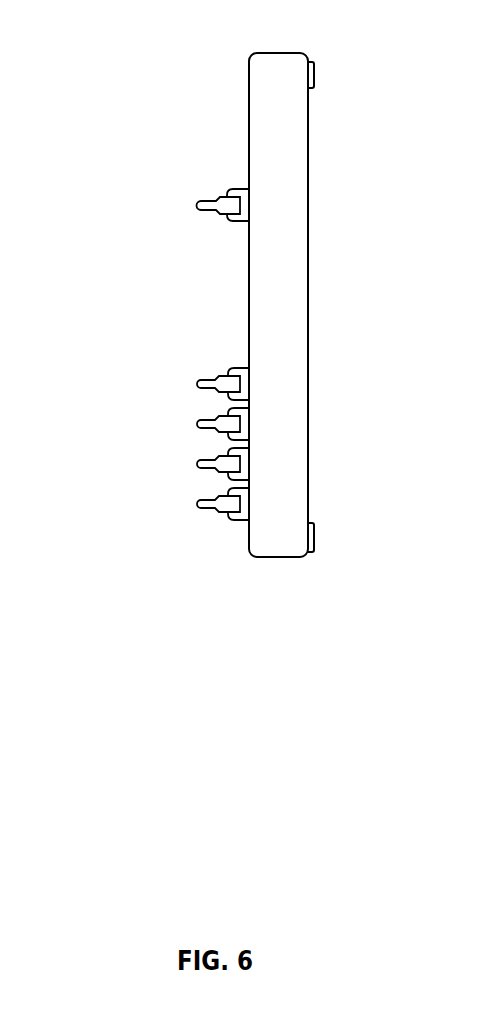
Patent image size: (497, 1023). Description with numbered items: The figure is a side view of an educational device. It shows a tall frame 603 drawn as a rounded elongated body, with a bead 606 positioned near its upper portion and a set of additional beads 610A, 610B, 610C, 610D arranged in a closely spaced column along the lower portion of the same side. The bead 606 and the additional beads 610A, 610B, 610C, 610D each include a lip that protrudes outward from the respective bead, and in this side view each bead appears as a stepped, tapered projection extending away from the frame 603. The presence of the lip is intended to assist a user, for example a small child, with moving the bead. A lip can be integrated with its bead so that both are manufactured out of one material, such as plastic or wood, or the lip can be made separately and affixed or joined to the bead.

The frame 603 is at (263, 35).
The bead 606 is at (191, 198).
The additional bead 610A is at (184, 385).
The additional bead 610B is at (184, 425).
The additional bead 610C is at (184, 465).
The connector 610D is at (184, 505).